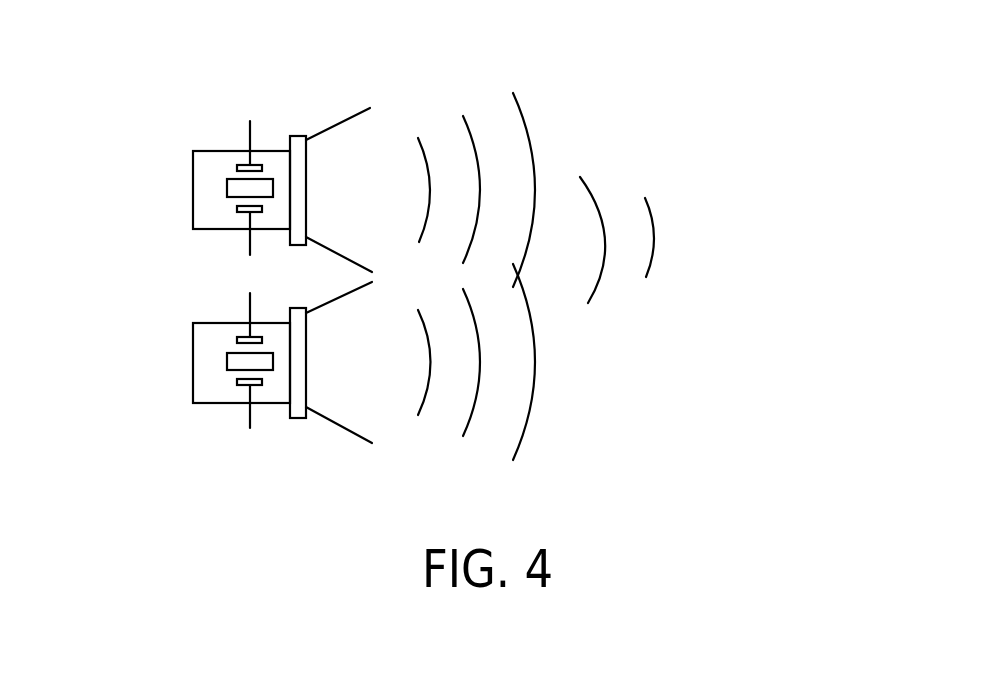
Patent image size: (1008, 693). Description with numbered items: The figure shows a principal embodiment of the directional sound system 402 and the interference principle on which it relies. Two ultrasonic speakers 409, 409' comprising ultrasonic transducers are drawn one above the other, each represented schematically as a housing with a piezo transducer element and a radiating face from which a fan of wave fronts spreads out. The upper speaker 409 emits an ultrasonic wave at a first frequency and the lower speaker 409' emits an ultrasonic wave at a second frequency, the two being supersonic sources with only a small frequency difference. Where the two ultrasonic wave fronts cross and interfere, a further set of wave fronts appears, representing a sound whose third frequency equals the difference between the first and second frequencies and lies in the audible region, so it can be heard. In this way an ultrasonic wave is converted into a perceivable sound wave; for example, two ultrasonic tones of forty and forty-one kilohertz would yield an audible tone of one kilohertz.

The directional sound system 402 is at (158, 74).
The ultrasonic speaker 409 is at (282, 155).
The ultrasonic speaker 409' is at (282, 399).